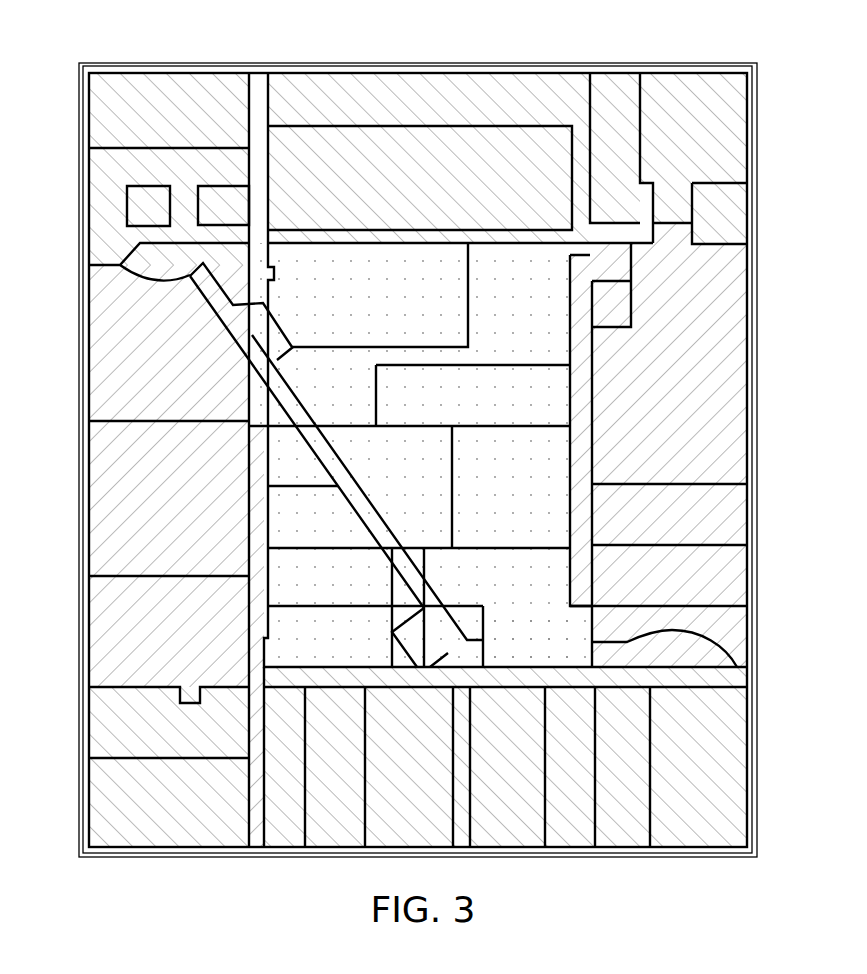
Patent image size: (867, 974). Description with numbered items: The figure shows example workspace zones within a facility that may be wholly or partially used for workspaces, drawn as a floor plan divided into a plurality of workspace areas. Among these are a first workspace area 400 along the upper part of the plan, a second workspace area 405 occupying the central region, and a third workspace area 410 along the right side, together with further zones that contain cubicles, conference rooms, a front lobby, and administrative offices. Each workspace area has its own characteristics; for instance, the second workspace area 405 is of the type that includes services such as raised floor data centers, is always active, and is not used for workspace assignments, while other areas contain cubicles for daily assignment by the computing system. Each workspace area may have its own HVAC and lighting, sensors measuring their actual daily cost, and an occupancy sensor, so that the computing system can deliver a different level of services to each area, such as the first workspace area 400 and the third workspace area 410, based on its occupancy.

The workspace area represented by zone 15A 400 is at (450, 443).
The workspace area represented by zone 13A 405 is at (452, 382).
The workspace area represented by zone 14A 410 is at (687, 430).